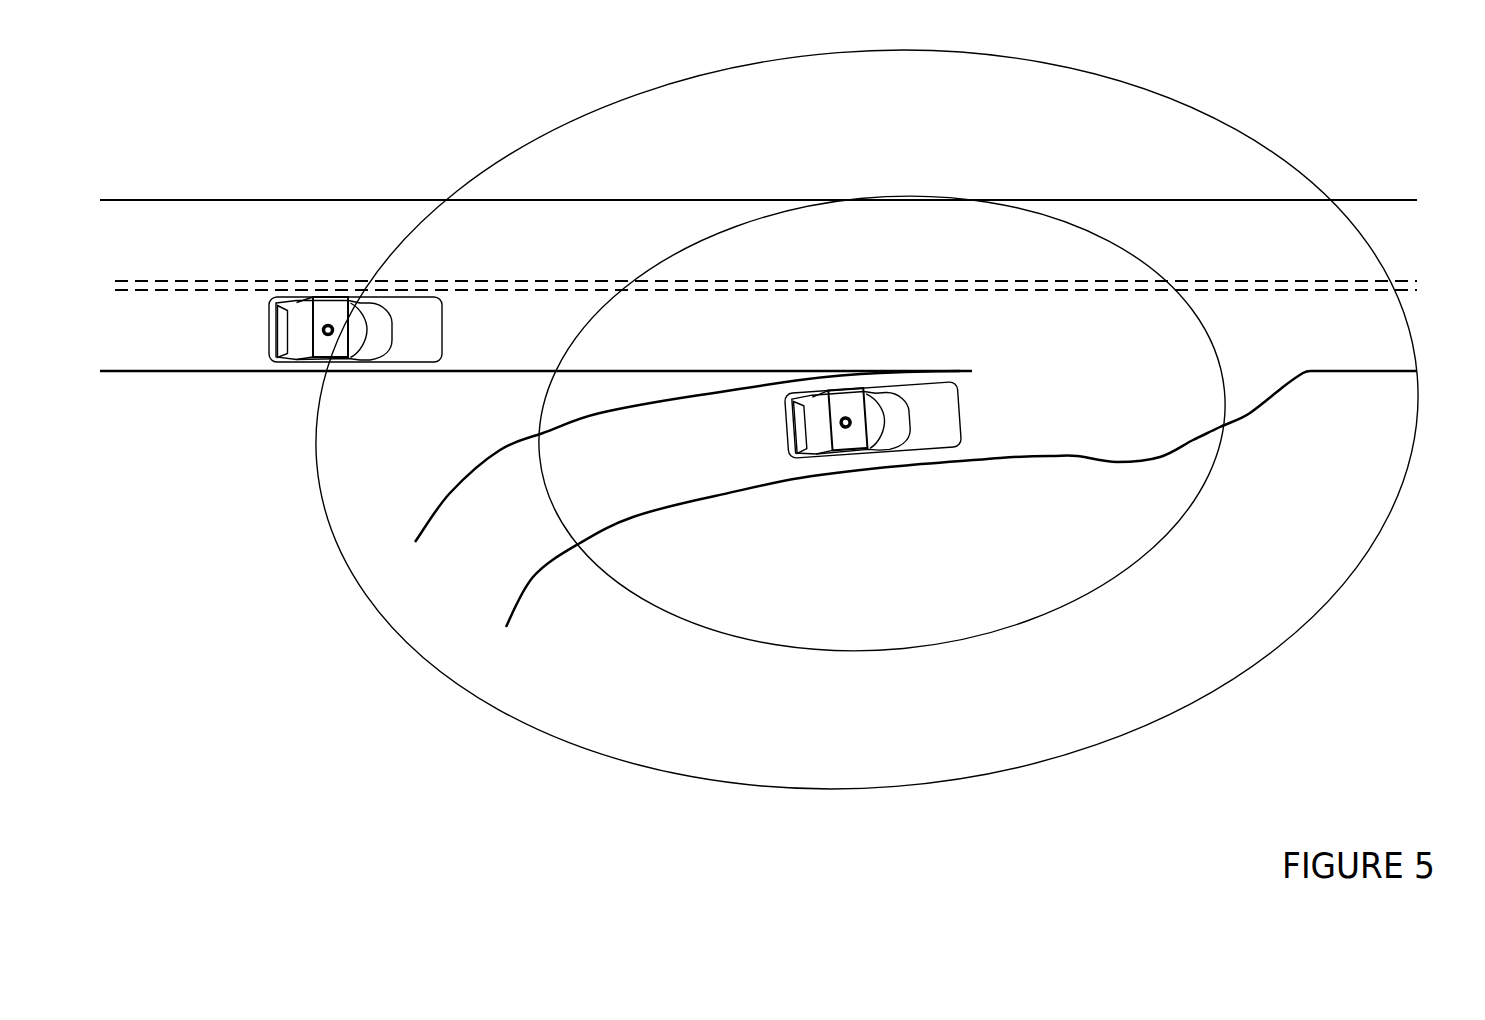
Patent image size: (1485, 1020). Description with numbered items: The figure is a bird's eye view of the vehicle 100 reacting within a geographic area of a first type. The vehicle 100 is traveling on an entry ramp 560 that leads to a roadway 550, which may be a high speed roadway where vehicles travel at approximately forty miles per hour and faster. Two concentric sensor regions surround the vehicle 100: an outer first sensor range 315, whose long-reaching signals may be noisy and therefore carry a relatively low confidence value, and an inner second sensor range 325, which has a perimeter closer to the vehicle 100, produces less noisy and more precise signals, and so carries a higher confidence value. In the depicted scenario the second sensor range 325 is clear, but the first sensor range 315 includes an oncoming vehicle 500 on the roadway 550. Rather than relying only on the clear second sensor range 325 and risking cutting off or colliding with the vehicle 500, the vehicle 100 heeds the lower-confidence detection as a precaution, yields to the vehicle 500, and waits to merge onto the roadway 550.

The vehicle 100 is at (938, 439).
The first sensor range 315 is at (1298, 542).
The second sensor range 325 is at (1093, 542).
The vehicle 500 is at (316, 298).
The roadway 550 is at (203, 199).
The entry ramp 560 is at (682, 473).